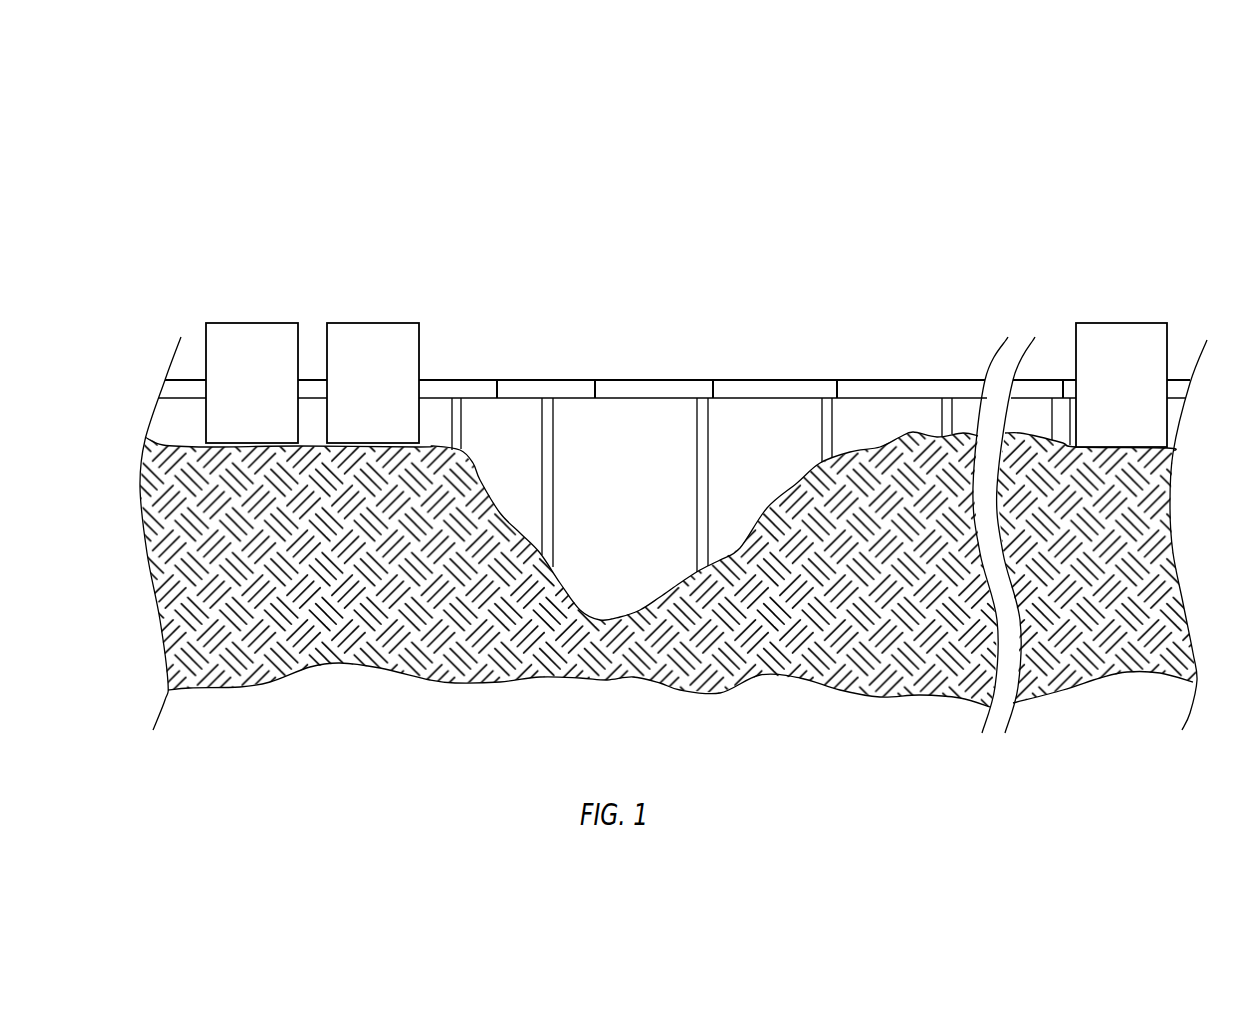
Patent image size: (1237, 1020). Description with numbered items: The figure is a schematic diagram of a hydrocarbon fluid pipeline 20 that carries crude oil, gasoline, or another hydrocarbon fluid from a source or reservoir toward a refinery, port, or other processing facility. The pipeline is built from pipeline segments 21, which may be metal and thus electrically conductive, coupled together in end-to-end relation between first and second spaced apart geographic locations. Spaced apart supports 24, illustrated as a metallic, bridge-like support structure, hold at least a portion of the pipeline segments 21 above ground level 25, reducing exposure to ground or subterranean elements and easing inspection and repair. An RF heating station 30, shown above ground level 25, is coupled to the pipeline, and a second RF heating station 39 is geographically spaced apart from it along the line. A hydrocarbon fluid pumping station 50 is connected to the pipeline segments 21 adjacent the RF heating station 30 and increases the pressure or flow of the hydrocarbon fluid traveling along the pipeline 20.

The hydrocarbon fluid pipeline 20 is at (392, 126).
The pipeline segments 21 is at (192, 380).
The supports 24 is at (540, 463).
The ground level 25 is at (785, 495).
The RF heating station 30 is at (273, 318).
The RF heating station 39 is at (1154, 318).
The hydrocarbon fluid pumping station 50 is at (391, 318).